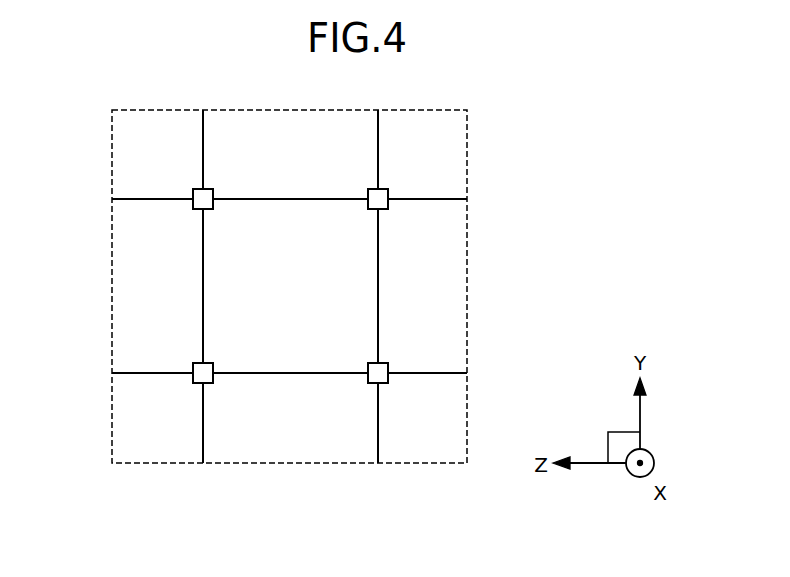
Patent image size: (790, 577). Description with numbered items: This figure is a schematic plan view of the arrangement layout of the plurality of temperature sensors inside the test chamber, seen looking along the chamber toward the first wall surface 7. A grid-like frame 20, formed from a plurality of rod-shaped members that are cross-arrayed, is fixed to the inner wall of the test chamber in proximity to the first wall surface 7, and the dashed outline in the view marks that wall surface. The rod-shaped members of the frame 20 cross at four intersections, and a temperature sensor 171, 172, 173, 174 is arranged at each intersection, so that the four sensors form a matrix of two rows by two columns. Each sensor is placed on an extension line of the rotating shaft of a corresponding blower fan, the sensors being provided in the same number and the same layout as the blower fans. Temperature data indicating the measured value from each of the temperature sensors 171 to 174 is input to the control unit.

The first wall surface 7 is at (110, 116).
The grid-like frame 20 is at (252, 200).
The temperature sensor 171 is at (385, 190).
The temperature sensor 172 is at (210, 190).
The temperature sensor 173 is at (385, 364).
The temperature sensor 174 is at (210, 364).